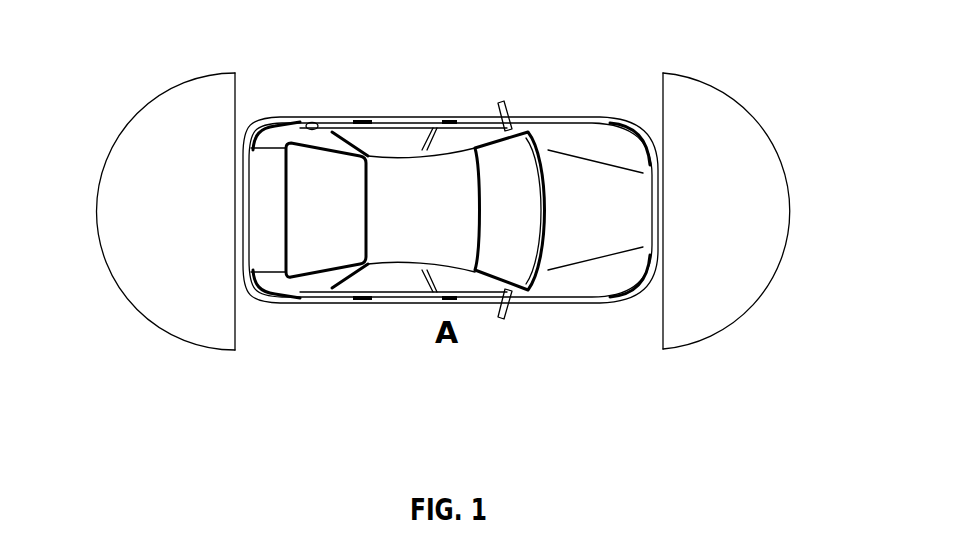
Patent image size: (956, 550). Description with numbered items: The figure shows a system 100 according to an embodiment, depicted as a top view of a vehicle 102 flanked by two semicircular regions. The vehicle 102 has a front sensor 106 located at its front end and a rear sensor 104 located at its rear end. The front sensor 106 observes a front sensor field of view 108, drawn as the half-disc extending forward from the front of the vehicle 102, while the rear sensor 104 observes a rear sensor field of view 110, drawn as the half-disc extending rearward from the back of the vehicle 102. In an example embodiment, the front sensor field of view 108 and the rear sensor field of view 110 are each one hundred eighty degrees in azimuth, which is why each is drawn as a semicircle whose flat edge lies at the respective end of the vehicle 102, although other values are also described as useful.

The system 100 is at (843, 32).
The vehicle 102 is at (502, 103).
The rear sensor 104 is at (235, 212).
The front sensor 106 is at (663, 210).
The front sensor field of view 108 is at (802, 212).
The rear sensor field of view 110 is at (97, 211).